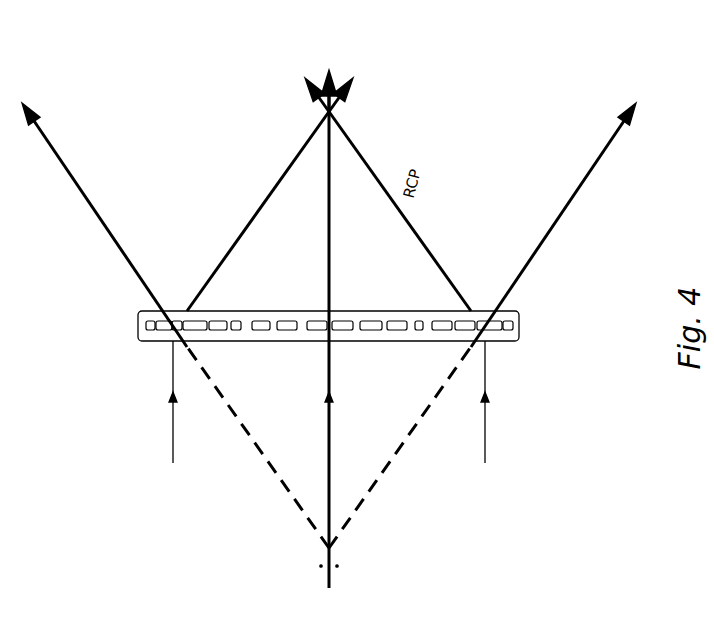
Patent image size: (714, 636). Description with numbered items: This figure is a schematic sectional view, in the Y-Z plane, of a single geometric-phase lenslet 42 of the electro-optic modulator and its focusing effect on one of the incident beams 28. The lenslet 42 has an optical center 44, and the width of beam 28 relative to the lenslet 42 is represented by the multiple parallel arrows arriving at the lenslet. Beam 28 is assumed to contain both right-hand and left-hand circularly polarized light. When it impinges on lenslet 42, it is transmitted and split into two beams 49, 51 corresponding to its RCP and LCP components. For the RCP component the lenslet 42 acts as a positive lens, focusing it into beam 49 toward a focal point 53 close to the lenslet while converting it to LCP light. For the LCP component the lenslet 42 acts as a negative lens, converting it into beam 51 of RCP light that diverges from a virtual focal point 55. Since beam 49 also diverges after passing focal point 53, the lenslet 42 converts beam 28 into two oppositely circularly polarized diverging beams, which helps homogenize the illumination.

The beam 28 is at (173, 442).
The geometric-phase lenslet 42 is at (138, 325).
The optical center 44 is at (312, 310).
The beam 49 is at (233, 232).
The beam 51 is at (68, 163).
The focal point 53 is at (335, 115).
The virtual focal point 55 is at (338, 543).